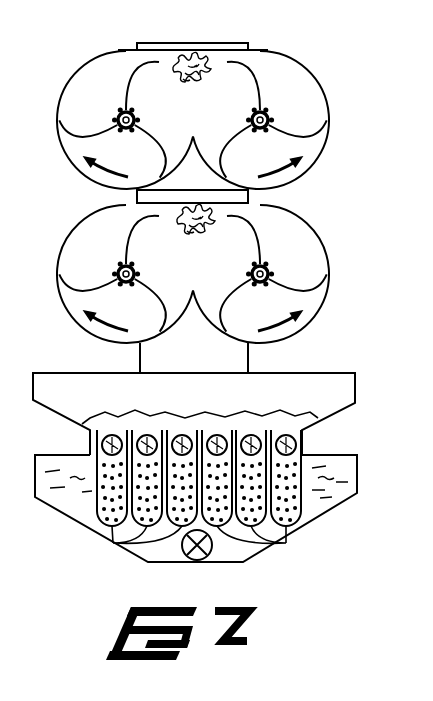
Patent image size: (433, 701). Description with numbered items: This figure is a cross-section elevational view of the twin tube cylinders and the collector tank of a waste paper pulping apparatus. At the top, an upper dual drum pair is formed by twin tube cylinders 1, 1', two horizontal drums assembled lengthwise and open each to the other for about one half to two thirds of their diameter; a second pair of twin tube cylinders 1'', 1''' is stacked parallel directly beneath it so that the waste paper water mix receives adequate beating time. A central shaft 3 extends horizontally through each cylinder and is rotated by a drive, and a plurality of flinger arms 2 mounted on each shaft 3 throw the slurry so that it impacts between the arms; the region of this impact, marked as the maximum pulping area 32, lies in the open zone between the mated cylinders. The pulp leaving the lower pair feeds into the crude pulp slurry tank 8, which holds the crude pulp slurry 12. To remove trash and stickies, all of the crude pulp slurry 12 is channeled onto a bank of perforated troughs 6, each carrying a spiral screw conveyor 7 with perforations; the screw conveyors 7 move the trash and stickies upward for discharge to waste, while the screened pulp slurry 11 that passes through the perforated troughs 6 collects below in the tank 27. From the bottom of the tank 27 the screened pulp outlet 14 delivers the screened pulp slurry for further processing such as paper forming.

The twin tube cylinder 1 is at (265, 117).
The twin tube cylinder 1' is at (119, 116).
The twin tube cylinder 1'' is at (273, 274).
The twin tube cylinder 1''' is at (120, 274).
The flinger arms 2 is at (136, 100).
The central shaft 3 is at (114, 112).
The maximum pulping area 32 is at (202, 56).
The crude pulp slurry tank 8 is at (356, 386).
The crude pulp slurry 12 is at (88, 427).
The spiral screw conveyor 7 is at (286, 436).
The tank 27 is at (358, 471).
The screened pulp slurry 11 is at (335, 485).
The perforated trough 6 is at (113, 543).
The screened pulp outlet 14 is at (200, 562).